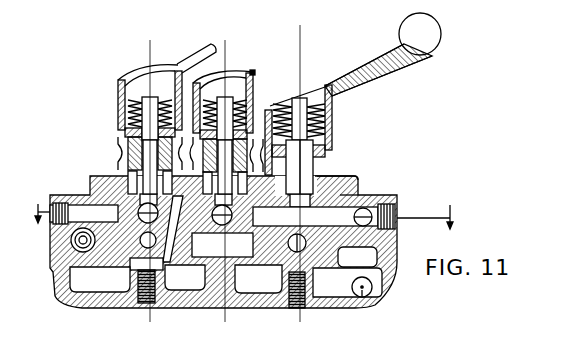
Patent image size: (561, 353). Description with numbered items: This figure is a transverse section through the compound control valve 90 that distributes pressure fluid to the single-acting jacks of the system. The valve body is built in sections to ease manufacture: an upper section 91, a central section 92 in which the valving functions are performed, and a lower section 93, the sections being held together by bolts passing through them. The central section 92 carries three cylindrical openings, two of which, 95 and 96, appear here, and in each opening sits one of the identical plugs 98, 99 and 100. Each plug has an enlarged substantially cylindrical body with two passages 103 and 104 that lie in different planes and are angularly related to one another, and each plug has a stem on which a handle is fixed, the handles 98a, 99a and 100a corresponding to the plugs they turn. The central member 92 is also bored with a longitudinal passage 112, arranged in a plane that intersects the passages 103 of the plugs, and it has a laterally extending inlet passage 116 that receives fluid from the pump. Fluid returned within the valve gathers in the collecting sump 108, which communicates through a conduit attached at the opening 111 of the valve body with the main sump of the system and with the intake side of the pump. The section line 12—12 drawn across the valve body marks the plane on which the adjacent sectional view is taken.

The section line 12 is at (248, 209).
The compound control valve 90 is at (258, 168).
The upper section 91 is at (337, 183).
The central section 92 is at (244, 253).
The lower section 93 is at (382, 297).
The cylindrical opening 95 is at (176, 161).
The cylindrical opening 96 is at (241, 161).
The plug 98 is at (117, 178).
The handle 98a is at (206, 46).
The plug 99 is at (258, 172).
The handle 99a is at (252, 71).
The plug 100 is at (374, 164).
The handle 100a is at (423, 23).
The passage 103 is at (142, 221).
The passage 104 is at (226, 232).
The collecting sump 108 is at (263, 282).
The opening 111 is at (358, 300).
The longitudinal passage 112 is at (350, 198).
The inlet passage 116 is at (360, 192).